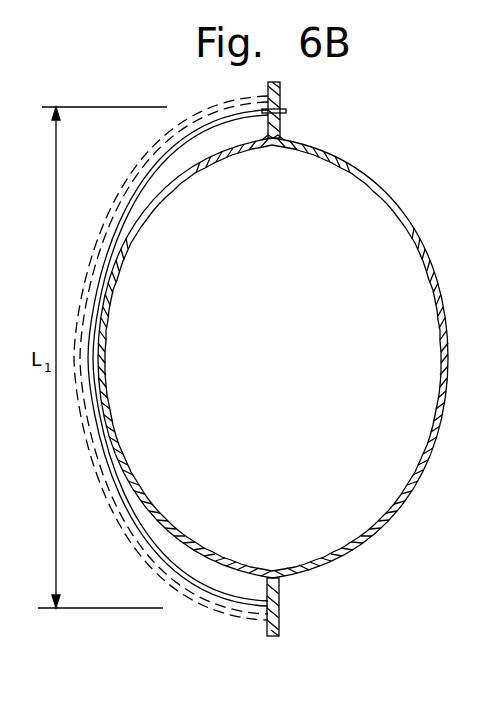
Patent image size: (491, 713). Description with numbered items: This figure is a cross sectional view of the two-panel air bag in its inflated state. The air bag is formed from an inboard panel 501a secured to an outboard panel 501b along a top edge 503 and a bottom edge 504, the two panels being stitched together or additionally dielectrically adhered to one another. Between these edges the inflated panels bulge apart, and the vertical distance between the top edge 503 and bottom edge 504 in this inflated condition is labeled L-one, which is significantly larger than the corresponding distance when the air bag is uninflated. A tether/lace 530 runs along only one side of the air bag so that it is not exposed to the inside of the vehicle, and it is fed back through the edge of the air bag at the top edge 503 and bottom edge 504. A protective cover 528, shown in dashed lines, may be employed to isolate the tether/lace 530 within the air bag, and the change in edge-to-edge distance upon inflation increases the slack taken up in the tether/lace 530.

The inboard panel 501a is at (355, 152).
The outboard panel 501b is at (104, 409).
The top edge 503 is at (281, 88).
The bottom edge 504 is at (280, 622).
The protective cover 528 is at (198, 610).
The tether/lace 530 is at (160, 165).